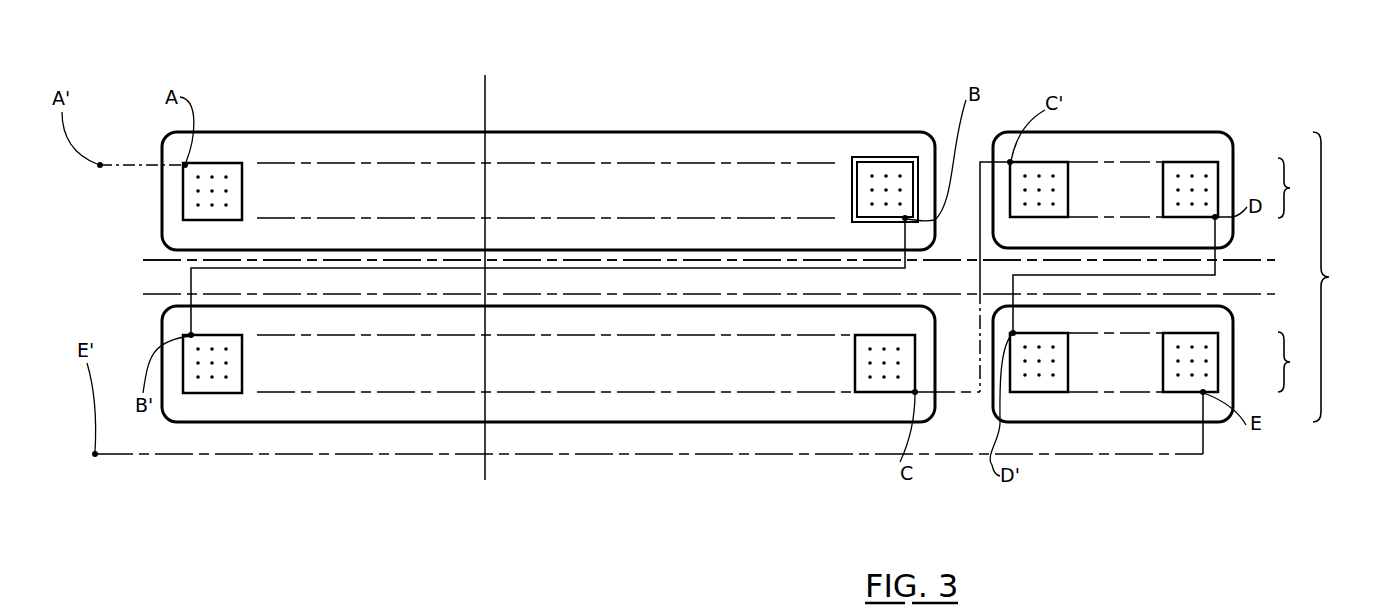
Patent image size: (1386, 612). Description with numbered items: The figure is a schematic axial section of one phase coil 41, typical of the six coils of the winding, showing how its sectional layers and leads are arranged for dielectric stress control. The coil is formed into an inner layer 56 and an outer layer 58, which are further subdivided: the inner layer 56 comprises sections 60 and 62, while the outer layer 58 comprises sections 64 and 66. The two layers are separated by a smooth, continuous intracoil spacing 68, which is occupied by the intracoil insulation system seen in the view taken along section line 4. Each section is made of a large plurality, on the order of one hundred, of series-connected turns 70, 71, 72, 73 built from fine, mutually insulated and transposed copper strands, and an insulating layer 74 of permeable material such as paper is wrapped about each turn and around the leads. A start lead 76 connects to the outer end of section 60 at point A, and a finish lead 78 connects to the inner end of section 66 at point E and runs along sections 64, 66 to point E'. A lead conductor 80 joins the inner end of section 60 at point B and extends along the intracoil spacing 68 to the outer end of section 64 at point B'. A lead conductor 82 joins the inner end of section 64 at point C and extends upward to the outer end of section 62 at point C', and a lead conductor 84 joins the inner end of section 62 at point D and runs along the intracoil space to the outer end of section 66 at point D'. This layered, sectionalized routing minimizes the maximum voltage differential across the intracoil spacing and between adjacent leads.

The section line 4 is at (485, 75).
The phase coil 41 is at (1335, 277).
The inner layer 56 is at (1297, 362).
The outer layer 58 is at (1297, 188).
The section 60 is at (645, 131).
The section 62 is at (1113, 131).
The section 64 is at (727, 423).
The section 66 is at (1137, 423).
The intracoil spacing 68 is at (1283, 257).
The turn 70 is at (222, 162).
The turn 71 is at (1062, 161).
The turn 72 is at (222, 394).
The turn 73 is at (1060, 393).
The insulating layer 74 is at (895, 156).
The start lead 76 is at (147, 163).
The finish lead 78 is at (168, 457).
The lead conductor 80 is at (763, 258).
The lead conductor 82 is at (980, 164).
The lead conductor 84 is at (1123, 274).